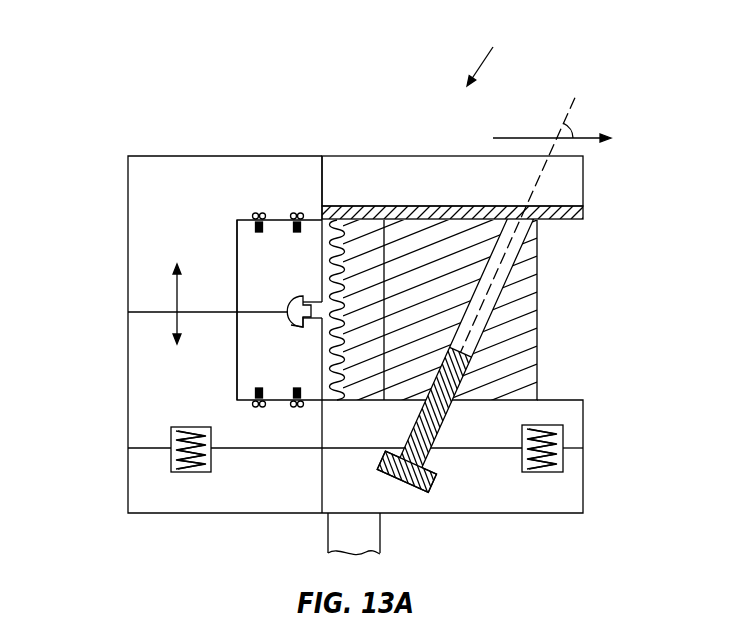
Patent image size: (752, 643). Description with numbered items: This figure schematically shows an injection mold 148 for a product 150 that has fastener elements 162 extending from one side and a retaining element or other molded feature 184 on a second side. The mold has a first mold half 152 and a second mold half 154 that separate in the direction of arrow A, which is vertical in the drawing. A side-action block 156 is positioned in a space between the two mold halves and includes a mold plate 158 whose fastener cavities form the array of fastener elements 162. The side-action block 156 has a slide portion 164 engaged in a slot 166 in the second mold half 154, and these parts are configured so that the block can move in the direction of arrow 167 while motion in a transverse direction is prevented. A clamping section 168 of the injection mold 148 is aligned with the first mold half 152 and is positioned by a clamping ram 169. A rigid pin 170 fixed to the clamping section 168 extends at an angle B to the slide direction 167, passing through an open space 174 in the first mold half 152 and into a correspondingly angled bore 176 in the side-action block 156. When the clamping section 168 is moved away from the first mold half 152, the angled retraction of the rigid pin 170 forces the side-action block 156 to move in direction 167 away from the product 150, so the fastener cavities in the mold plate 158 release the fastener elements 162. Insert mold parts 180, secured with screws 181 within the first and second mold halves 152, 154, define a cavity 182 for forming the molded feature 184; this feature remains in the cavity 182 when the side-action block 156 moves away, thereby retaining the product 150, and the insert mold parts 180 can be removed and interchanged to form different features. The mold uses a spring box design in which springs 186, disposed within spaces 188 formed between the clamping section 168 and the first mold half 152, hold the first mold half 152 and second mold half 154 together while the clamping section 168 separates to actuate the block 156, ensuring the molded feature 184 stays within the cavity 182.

The injection mold 148 is at (500, 56).
The product 150 is at (322, 218).
The first mold half 152 is at (127, 372).
The second mold half 154 is at (127, 225).
The side-action block 156 is at (538, 292).
The mold plate 158 is at (372, 235).
The fastener elements 162 is at (388, 391).
The slide portion 164 is at (585, 216).
The slot 166 is at (357, 212).
The slide direction 167 is at (552, 126).
The clamping section 168 is at (584, 483).
The clamping ram 169 is at (328, 527).
The rigid pin 170 is at (471, 521).
The open space 174 is at (526, 478).
The angled bore 176 is at (487, 322).
The insert mold parts 180 is at (245, 248).
The screws 181 is at (252, 216).
The cavity 182 is at (287, 297).
The molded feature 184 is at (285, 327).
The springs 186 is at (173, 453).
The spaces 188 is at (173, 468).
The direction of mold separation A is at (172, 298).
The angle of rigid pin B is at (545, 225).